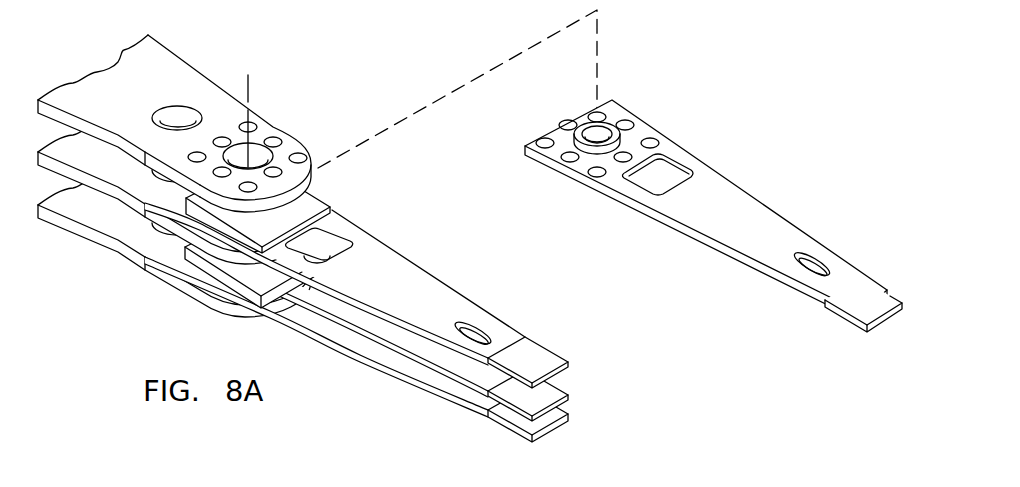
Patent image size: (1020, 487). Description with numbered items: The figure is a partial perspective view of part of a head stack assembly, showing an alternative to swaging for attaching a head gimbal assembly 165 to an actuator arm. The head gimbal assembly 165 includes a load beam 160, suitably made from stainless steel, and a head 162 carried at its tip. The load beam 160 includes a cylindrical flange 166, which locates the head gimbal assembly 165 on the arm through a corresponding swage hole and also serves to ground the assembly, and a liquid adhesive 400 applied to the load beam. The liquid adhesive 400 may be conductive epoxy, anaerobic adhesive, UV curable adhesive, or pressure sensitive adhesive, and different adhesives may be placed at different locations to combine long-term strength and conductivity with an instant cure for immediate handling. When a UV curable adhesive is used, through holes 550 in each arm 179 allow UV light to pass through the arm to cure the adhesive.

The load beam 160 is at (718, 228).
The head 162 is at (849, 323).
The head gimbal assembly 165 is at (697, 233).
The cylindrical flange 166 is at (587, 123).
The arm 179 is at (70, 233).
The liquid adhesive 400 is at (655, 138).
The through holes 550 is at (281, 134).